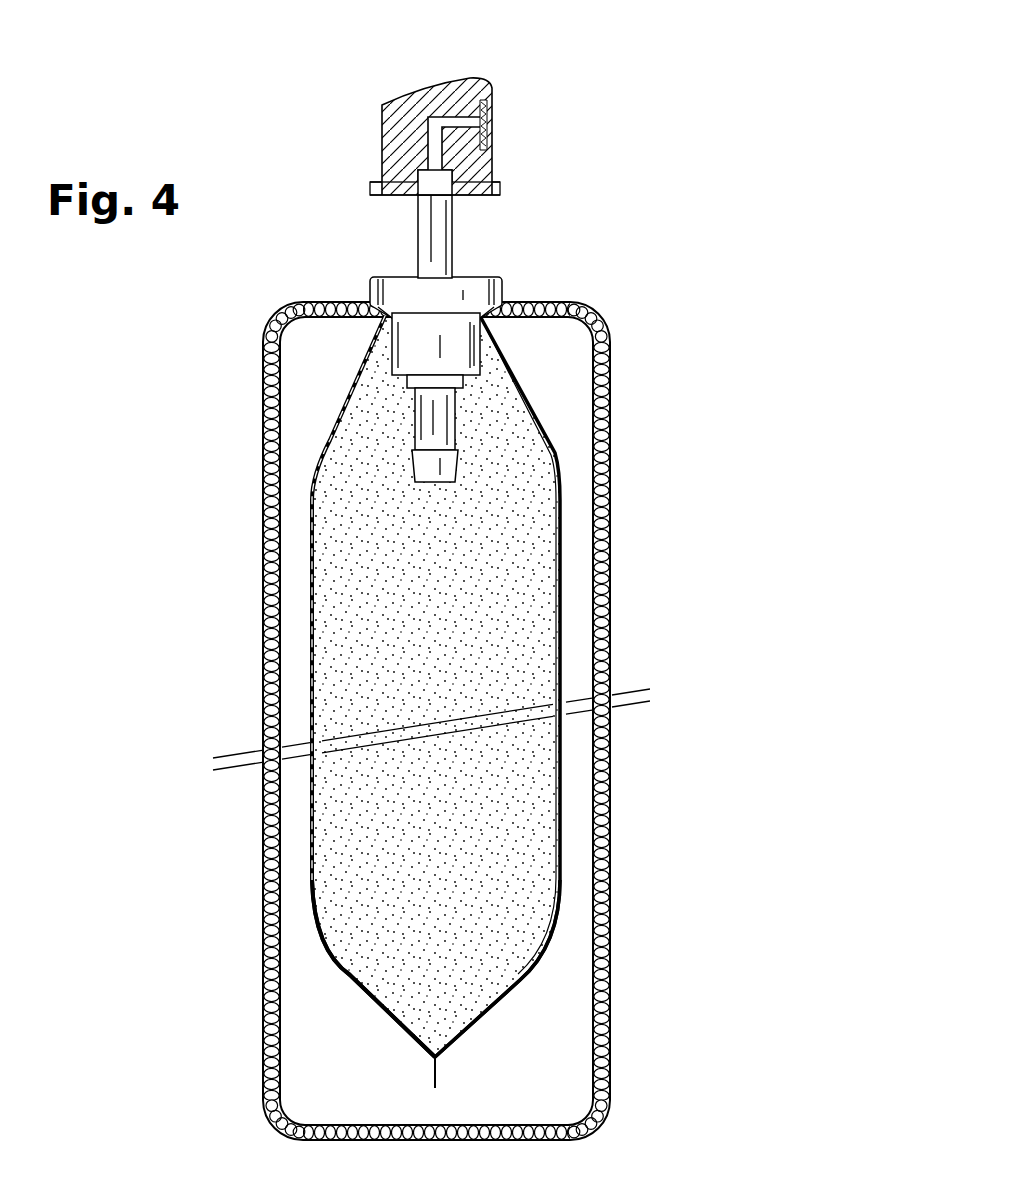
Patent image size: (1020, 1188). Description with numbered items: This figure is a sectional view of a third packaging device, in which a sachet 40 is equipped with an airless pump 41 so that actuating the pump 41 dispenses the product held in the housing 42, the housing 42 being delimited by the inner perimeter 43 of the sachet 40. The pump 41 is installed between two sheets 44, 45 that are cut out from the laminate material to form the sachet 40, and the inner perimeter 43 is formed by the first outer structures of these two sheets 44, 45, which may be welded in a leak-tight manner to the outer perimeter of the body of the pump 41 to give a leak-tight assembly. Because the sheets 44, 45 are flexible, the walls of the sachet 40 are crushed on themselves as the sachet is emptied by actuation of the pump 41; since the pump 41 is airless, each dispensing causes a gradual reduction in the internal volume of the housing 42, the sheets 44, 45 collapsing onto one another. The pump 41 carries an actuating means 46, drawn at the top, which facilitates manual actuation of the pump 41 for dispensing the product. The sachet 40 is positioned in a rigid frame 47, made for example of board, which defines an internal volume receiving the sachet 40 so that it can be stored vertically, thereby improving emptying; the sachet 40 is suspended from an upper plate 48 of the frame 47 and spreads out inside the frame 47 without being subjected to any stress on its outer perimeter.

The sachet 40 is at (539, 416).
The airless pump 41 is at (470, 277).
The housing 42 is at (512, 540).
The inner perimeter 43 is at (550, 597).
The sheet 44 is at (367, 987).
The sheet 45 is at (508, 992).
The actuating means 46 is at (416, 93).
The rigid frame 47 is at (605, 772).
The upper plate 48 is at (325, 300).